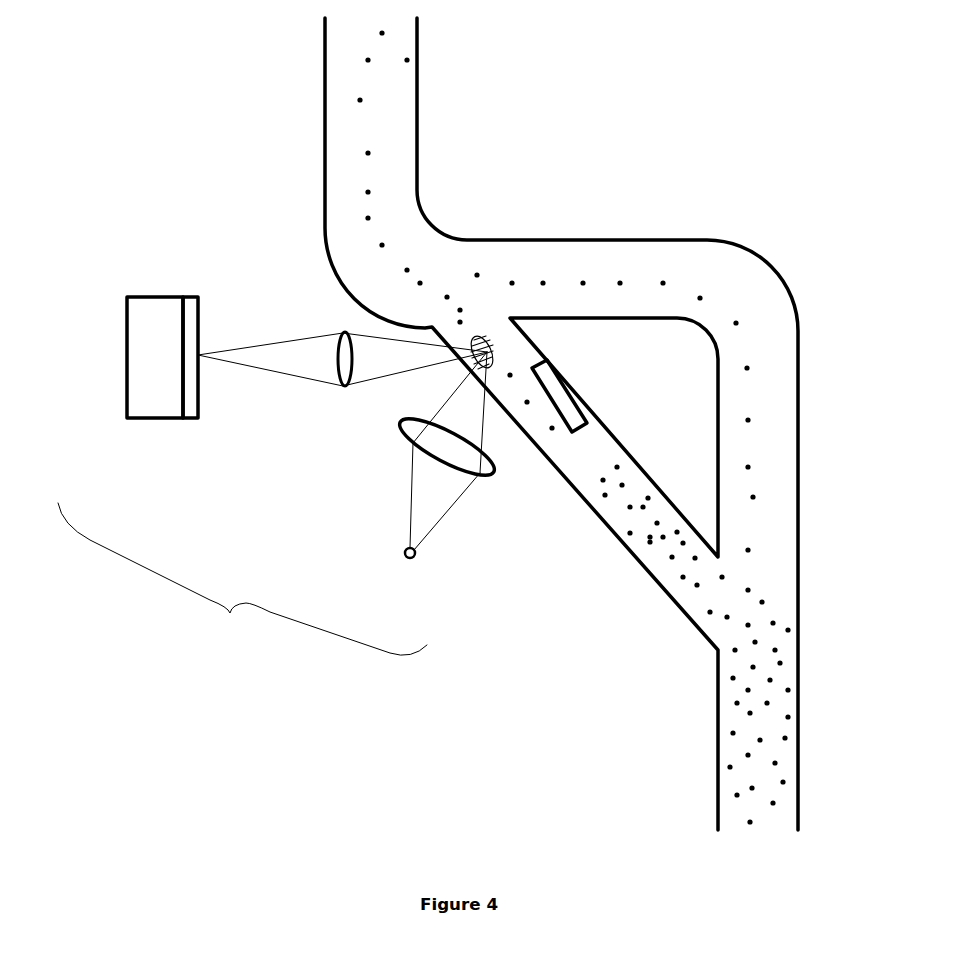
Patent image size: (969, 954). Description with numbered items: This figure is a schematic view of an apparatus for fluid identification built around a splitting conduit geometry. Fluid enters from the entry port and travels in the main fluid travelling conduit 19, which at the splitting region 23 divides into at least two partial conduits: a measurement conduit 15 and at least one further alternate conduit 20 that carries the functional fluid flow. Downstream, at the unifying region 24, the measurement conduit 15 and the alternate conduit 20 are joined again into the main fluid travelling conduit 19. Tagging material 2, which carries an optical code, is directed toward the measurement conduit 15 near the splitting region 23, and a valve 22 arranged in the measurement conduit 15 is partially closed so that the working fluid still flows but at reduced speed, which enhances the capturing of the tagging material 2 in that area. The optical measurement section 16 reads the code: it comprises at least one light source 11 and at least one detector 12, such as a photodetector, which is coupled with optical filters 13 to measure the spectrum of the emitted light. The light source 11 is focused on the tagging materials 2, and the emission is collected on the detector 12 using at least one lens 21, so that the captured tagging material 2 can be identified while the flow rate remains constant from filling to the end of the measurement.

The tagging material 2 is at (582, 283).
The light source 11 is at (416, 560).
The detector 12 is at (157, 390).
The optical filters 13 is at (189, 390).
The measurement conduit 15 is at (577, 455).
The optical measurement section 16 is at (242, 579).
The main fluid travelling conduit 19 is at (378, 102).
The alternate conduit 20 is at (762, 350).
The lens 21 is at (340, 388).
The valve 22 is at (560, 390).
The splitting region 23 is at (476, 301).
The unifying region 24 is at (737, 580).